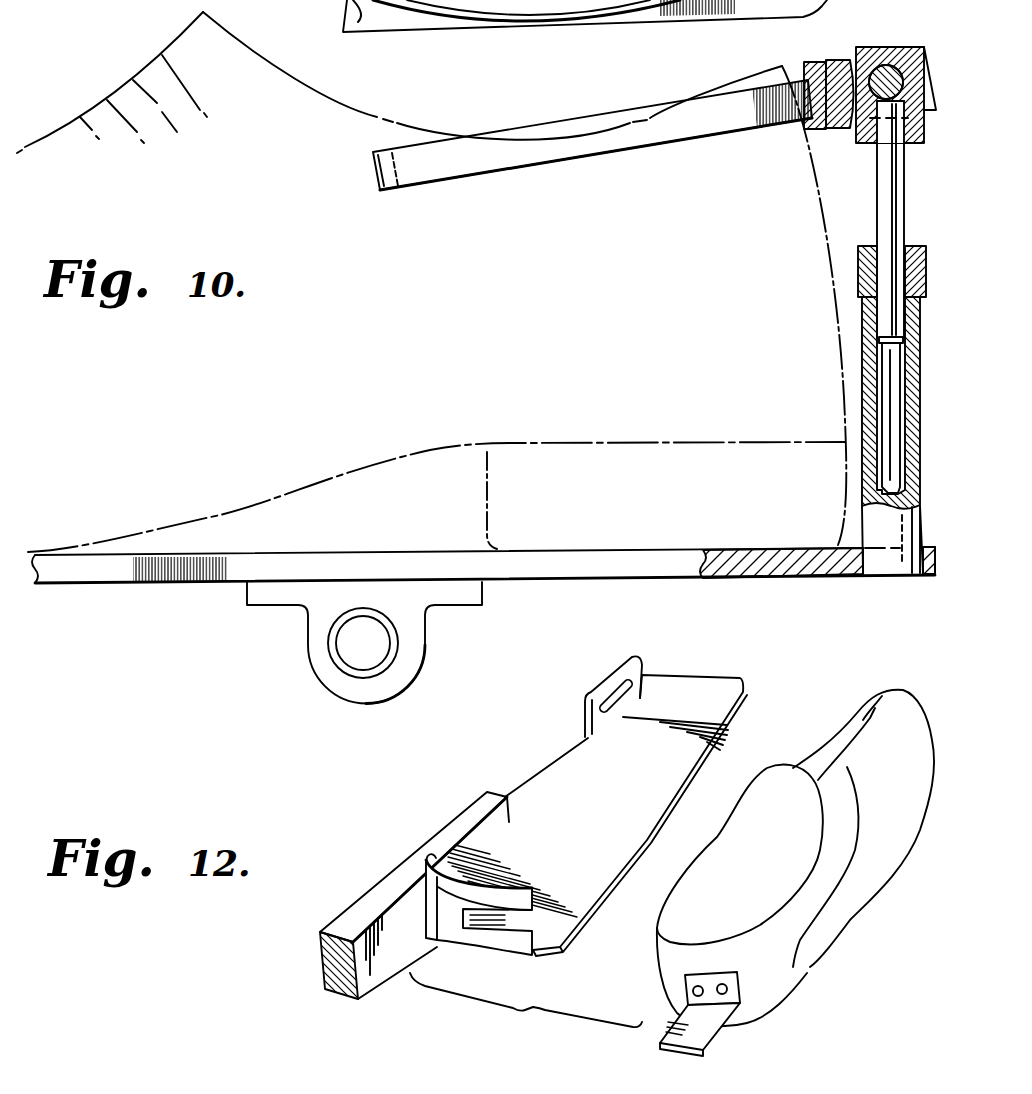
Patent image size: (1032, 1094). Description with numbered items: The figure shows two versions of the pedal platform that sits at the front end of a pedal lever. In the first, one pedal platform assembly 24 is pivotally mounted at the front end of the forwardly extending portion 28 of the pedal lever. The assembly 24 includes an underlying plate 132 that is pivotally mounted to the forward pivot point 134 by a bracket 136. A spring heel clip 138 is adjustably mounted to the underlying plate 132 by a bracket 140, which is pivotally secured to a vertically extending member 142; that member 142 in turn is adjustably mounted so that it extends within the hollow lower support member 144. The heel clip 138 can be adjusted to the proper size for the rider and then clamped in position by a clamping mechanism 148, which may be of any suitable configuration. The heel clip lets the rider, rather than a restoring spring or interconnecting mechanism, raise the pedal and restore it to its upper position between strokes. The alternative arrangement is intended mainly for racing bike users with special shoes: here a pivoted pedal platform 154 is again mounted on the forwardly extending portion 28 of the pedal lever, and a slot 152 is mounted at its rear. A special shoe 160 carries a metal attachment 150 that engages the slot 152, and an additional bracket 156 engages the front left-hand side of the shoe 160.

In FIG. 10, the pedal platform assembly 24 is at (387, 533).
In FIG. 12, the forwardly extending portion of the pedal lever 28 is at (368, 897).
In FIG. 10, the underlying plate 132 is at (645, 567).
In FIG. 10, the forward pivot point 134 is at (363, 642).
In FIG. 10, the bracket 136 is at (403, 673).
In FIG. 10, the heel clip 138 is at (490, 158).
In FIG. 10, the bracket 140 is at (840, 130).
In FIG. 10, the vertically extending member 142 is at (887, 212).
In FIG. 10, the hollow lower support member 144 is at (868, 402).
In FIG. 10, the clamping mechanism 148 is at (858, 285).
In FIG. 12, the metal attachment 150 is at (707, 1023).
In FIG. 12, the slot 152 is at (505, 915).
In FIG. 12, the pedal platform 154 is at (683, 702).
In FIG. 12, the bracket 156 is at (583, 722).
In FIG. 12, the shoe 160 is at (885, 716).